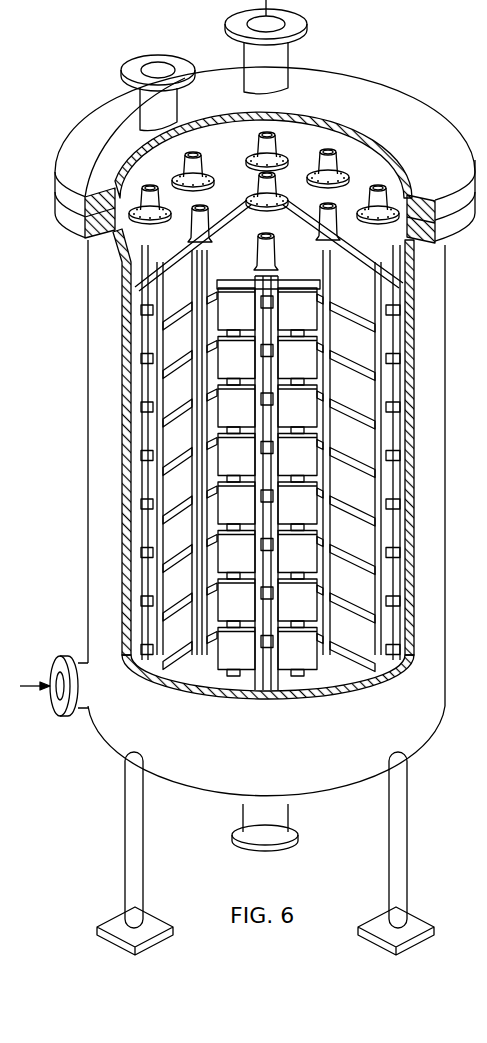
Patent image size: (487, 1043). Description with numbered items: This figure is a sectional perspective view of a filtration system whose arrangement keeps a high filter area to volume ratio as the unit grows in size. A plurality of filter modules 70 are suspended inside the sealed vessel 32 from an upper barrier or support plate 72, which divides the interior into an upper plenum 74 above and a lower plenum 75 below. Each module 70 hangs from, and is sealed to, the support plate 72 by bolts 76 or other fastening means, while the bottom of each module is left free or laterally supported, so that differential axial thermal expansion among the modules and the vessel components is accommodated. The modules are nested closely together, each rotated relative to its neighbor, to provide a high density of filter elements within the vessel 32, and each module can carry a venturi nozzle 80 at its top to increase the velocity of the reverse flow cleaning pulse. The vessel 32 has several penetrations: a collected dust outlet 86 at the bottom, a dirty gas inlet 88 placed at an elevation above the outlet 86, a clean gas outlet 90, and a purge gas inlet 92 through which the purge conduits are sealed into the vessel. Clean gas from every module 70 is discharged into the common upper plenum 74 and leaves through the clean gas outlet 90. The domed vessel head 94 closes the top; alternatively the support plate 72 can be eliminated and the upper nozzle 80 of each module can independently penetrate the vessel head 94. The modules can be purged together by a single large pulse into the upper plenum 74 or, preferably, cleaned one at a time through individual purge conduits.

The sealed vessel 32 is at (422, 722).
The filter module 70 is at (254, 682).
The support plate 72 is at (386, 251).
The upper plenum 74 is at (153, 251).
The lower plenum 75 is at (200, 666).
The bolts 76 is at (370, 203).
The venturi nozzle 80 is at (203, 168).
The collected dust outlet 86 is at (275, 819).
The dirty gas inlet 88 is at (80, 667).
The clean gas outlet 90 is at (302, 25).
The purge gas inlet 92 is at (132, 62).
The vessel head 94 is at (386, 104).